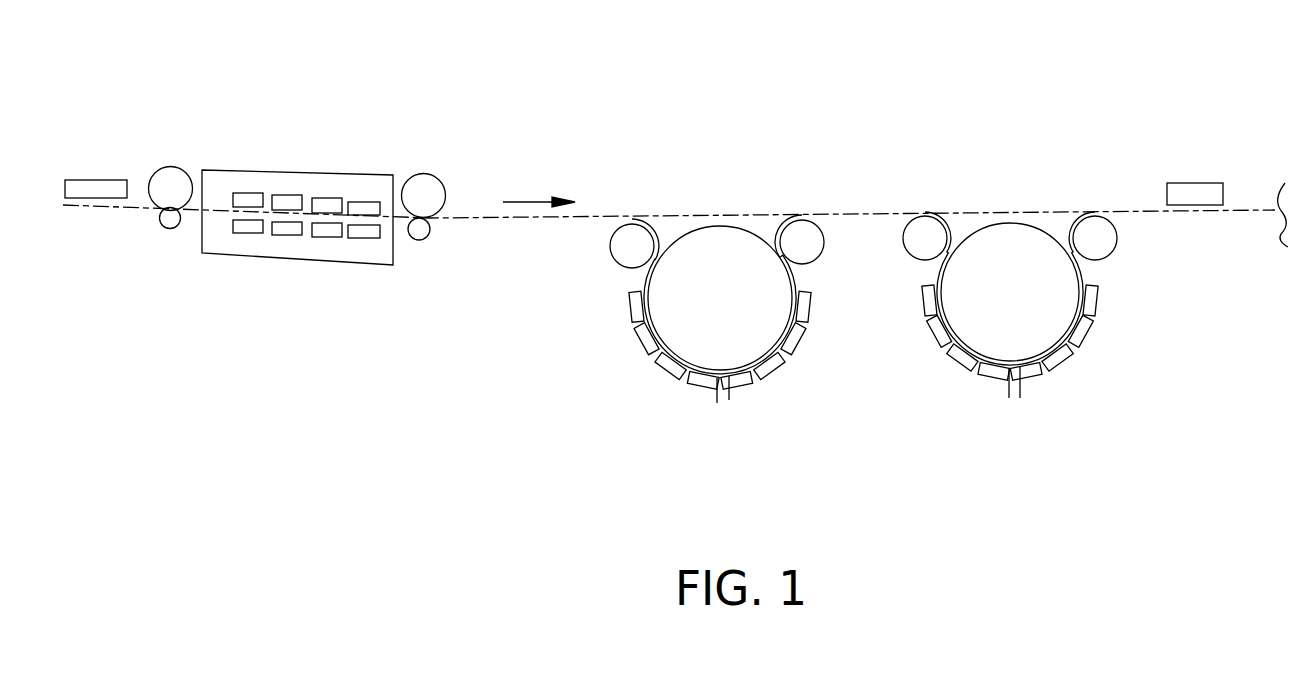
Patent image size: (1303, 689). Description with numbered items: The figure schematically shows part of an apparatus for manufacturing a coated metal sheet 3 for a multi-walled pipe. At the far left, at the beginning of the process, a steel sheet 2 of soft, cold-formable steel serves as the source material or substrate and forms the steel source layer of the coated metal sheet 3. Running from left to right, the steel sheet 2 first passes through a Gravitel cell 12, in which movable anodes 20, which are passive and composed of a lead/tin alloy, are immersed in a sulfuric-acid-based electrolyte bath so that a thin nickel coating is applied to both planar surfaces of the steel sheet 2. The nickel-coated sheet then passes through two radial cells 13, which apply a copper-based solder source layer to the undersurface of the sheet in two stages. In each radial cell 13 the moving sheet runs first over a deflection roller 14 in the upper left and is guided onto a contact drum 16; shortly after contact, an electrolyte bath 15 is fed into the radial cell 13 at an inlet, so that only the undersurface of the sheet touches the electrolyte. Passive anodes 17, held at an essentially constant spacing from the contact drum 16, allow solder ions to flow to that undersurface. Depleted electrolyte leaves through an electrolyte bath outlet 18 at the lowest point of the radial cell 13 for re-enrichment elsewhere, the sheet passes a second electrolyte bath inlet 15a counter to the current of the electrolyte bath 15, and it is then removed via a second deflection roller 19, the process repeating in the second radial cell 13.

The steel sheet 2 is at (105, 198).
The coated metal sheet 3 is at (477, 219).
The Gravitel cell 12 is at (297, 208).
The radial cell 13 is at (856, 274).
The deflection roller 14 is at (633, 245).
The electrolyte bath 15 is at (868, 293).
The second electrolyte bath inlet 15a is at (795, 289).
The contact drum 16 is at (723, 247).
The passive anodes 17 is at (673, 376).
The electrolyte bath outlet 18 is at (730, 403).
The second deflection roller 19 is at (800, 242).
The movable anodes 20 is at (326, 233).